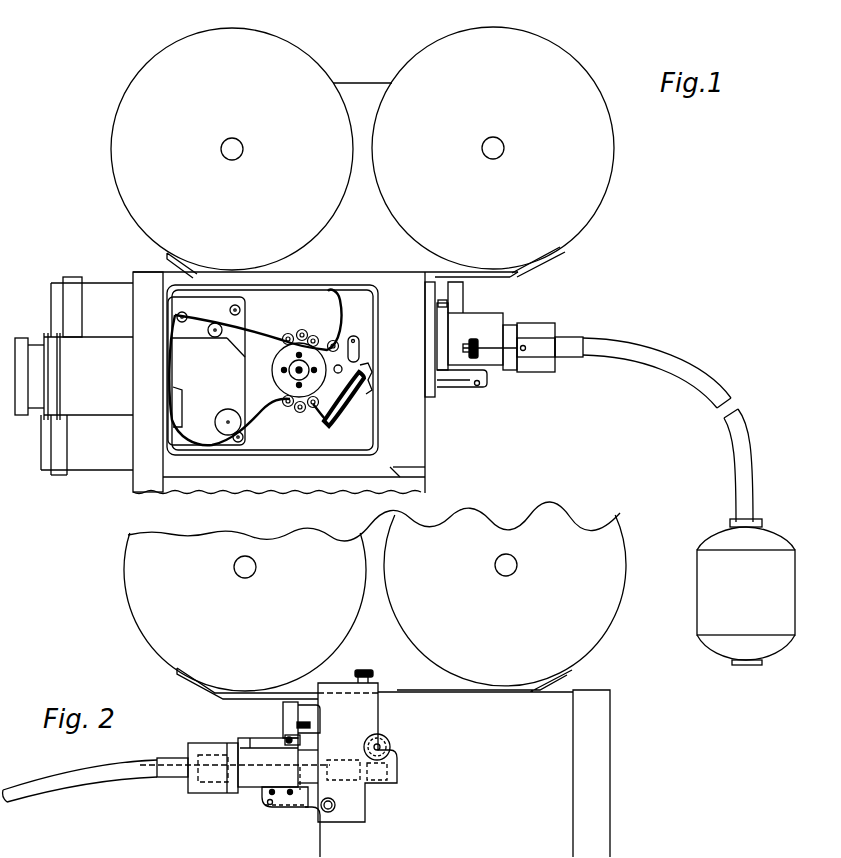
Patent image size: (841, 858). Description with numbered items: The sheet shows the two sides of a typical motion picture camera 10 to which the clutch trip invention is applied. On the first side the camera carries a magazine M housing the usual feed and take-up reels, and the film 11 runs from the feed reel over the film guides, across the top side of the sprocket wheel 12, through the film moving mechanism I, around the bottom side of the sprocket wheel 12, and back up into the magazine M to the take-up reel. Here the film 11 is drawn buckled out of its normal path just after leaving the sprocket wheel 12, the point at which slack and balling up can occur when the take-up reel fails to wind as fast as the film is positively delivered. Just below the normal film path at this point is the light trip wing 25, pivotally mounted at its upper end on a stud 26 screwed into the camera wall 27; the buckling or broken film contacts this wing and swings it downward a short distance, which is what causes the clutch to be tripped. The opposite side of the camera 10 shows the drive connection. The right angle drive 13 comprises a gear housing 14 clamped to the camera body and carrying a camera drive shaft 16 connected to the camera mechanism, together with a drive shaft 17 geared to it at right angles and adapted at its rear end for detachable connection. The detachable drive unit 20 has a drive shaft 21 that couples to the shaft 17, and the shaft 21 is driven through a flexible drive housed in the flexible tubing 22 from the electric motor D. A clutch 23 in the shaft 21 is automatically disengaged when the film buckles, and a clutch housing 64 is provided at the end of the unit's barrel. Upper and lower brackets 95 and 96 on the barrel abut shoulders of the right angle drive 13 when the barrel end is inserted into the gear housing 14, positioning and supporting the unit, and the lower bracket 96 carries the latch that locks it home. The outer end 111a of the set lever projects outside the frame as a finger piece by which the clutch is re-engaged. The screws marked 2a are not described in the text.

In FIG. 1, the magazine M is at (138, 70).
In FIG. 2, the magazine M is at (123, 603).
In FIG. 1, the motion picture camera 10 is at (152, 267).
In FIG. 2, the motion picture camera 10 is at (604, 684).
In FIG. 1, the film moving mechanism I is at (206, 371).
In FIG. 1, the film 11 is at (330, 303).
In FIG. 1, the sprocket wheel 12 is at (279, 350).
In FIG. 1, the trip wing 25 is at (344, 402).
In FIG. 1, the stud 26 is at (362, 372).
In FIG. 1, the camera wall 27 is at (320, 428).
In FIG. 1, the detachable drive unit 20 is at (489, 313).
In FIG. 2, the detachable drive unit 20 is at (256, 779).
In FIG. 1, the outer end of set lever 111a is at (470, 358).
In FIG. 1, the clutch housing 64 is at (538, 366).
In FIG. 2, the clutch housing 64 is at (200, 793).
In FIG. 1, the flexible tubing 22 is at (680, 363).
In FIG. 2, the flexible tubing 22 is at (102, 772).
In FIG. 1, the electric motor D is at (695, 579).
In FIG. 2, the clutch 23 is at (212, 753).
In FIG. 2, the drive shaft 21 is at (258, 765).
In FIG. 2, the lower bracket 96 is at (283, 810).
In FIG. 2, the upper bracket 95 is at (305, 740).
In FIG. 2, the adjusting screws 2a is at (305, 713).
In FIG. 2, the right angle drive 13 is at (362, 730).
In FIG. 2, the gear housing 14 is at (340, 750).
In FIG. 2, the camera drive shaft 16 is at (392, 744).
In FIG. 2, the drive shaft 17 is at (370, 765).